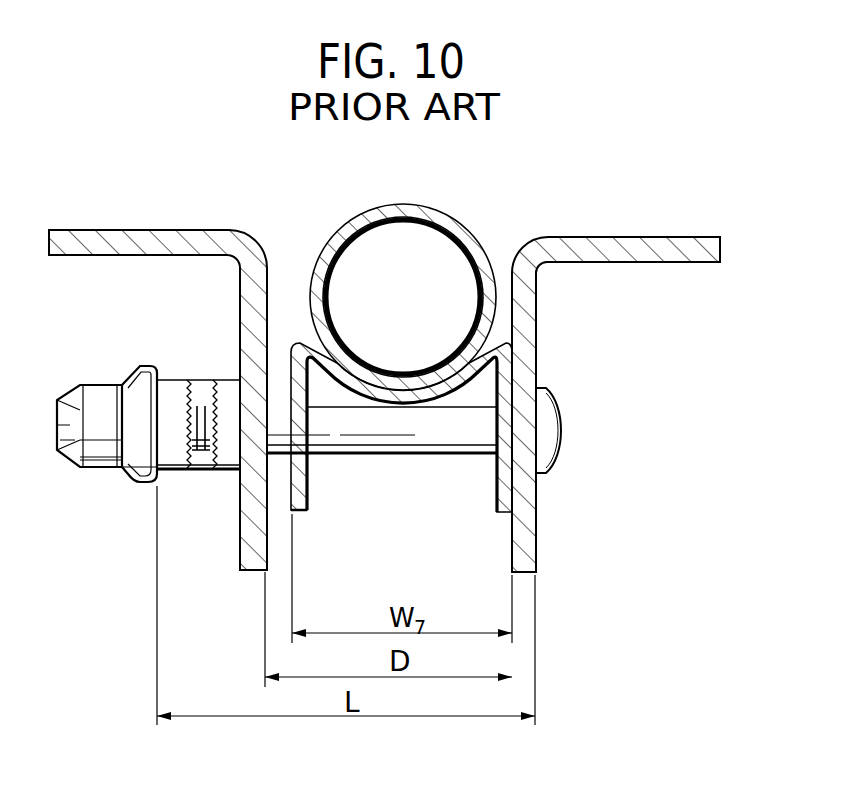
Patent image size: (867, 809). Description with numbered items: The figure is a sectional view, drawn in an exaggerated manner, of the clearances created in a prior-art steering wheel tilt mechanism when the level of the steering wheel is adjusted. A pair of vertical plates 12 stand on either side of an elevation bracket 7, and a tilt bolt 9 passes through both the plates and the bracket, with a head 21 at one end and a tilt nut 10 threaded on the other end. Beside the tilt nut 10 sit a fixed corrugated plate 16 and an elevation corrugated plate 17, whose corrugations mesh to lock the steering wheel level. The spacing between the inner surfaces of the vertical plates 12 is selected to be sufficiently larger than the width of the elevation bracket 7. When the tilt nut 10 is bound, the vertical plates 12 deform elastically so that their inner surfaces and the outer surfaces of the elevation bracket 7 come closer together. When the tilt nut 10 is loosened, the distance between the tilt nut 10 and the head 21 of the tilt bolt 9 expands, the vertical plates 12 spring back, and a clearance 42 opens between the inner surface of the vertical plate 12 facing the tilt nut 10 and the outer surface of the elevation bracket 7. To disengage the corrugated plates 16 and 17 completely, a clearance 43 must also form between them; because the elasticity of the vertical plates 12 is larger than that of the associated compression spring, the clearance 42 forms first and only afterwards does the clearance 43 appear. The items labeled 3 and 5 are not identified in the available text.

The pipe 3 is at (473, 234).
The mounting bracket 5 is at (214, 231).
The vertical plates 12 is at (240, 303).
The elevation bracket 7 is at (500, 360).
The tilt bolt 9 is at (455, 437).
The tilt nut 10 is at (104, 470).
The fixed corrugated plate 16 is at (210, 466).
The elevation corrugated plate 17 is at (188, 396).
The head of the tilt bolt 21 is at (550, 412).
The clearance 42 is at (277, 464).
The clearance 43 is at (186, 466).